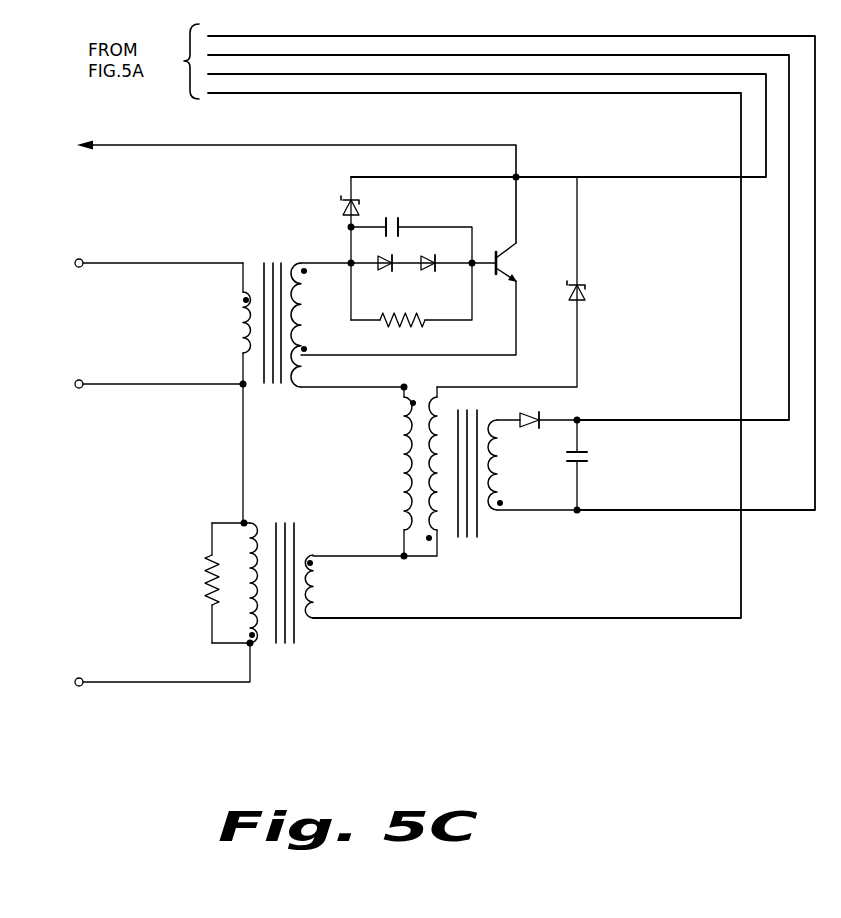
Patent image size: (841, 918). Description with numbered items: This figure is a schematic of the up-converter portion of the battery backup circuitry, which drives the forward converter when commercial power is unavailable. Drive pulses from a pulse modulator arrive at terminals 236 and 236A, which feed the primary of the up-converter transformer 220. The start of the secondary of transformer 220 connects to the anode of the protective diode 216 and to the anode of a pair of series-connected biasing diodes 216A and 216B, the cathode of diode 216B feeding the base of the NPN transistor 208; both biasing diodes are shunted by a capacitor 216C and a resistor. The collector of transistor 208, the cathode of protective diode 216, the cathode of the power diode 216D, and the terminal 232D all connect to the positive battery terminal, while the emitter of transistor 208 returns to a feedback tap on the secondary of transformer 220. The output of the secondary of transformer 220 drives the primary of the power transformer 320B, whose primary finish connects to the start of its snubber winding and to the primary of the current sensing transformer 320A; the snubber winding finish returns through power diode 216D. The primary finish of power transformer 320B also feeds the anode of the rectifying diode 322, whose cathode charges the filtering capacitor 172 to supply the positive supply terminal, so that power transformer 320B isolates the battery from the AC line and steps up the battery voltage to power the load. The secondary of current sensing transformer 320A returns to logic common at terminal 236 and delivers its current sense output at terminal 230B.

The terminal 232D is at (92, 152).
The protective diode 216 is at (345, 208).
The biasing diode 216A is at (390, 266).
The biasing diode 216B is at (454, 237).
The capacitor 216C is at (400, 226).
The power diode 216D is at (585, 291).
The NPN transistor 208 is at (506, 271).
The up-converter transformer 220 is at (262, 270).
The terminal 236A is at (82, 259).
The terminal 236 is at (82, 380).
The terminal 230B is at (82, 678).
The rectifying diode 322 is at (540, 418).
The filtering capacitor 172 is at (572, 464).
The current sensing transformer 320A is at (287, 645).
The power transformer 320B is at (478, 527).